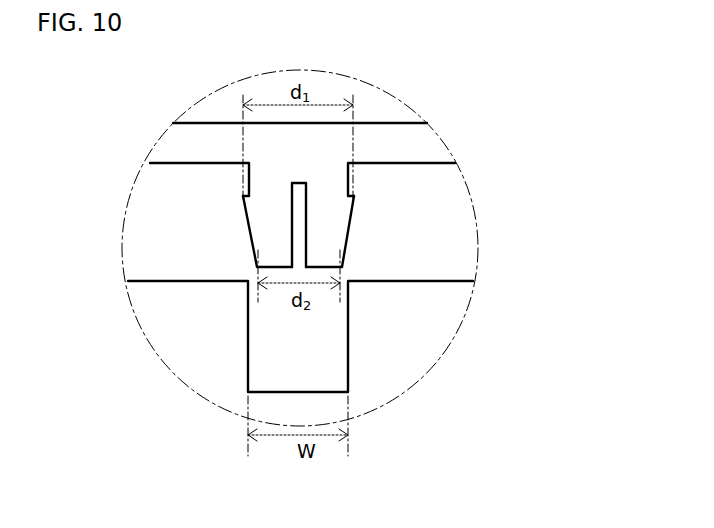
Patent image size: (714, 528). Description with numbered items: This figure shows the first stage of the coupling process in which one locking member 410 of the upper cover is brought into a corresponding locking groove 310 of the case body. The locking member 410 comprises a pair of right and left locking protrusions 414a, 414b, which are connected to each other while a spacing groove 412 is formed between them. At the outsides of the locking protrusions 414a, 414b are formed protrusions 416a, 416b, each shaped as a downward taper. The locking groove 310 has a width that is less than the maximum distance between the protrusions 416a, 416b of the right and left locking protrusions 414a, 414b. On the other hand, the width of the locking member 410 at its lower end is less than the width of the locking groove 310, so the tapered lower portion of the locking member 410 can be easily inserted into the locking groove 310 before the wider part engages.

The locking member 410 is at (220, 143).
The spacing groove 412 is at (302, 199).
The protrusion 416a is at (243, 204).
The protrusion 416b is at (355, 198).
The locking protrusion 414a is at (260, 230).
The locking protrusion 414b is at (333, 230).
The locking groove 310 is at (350, 367).